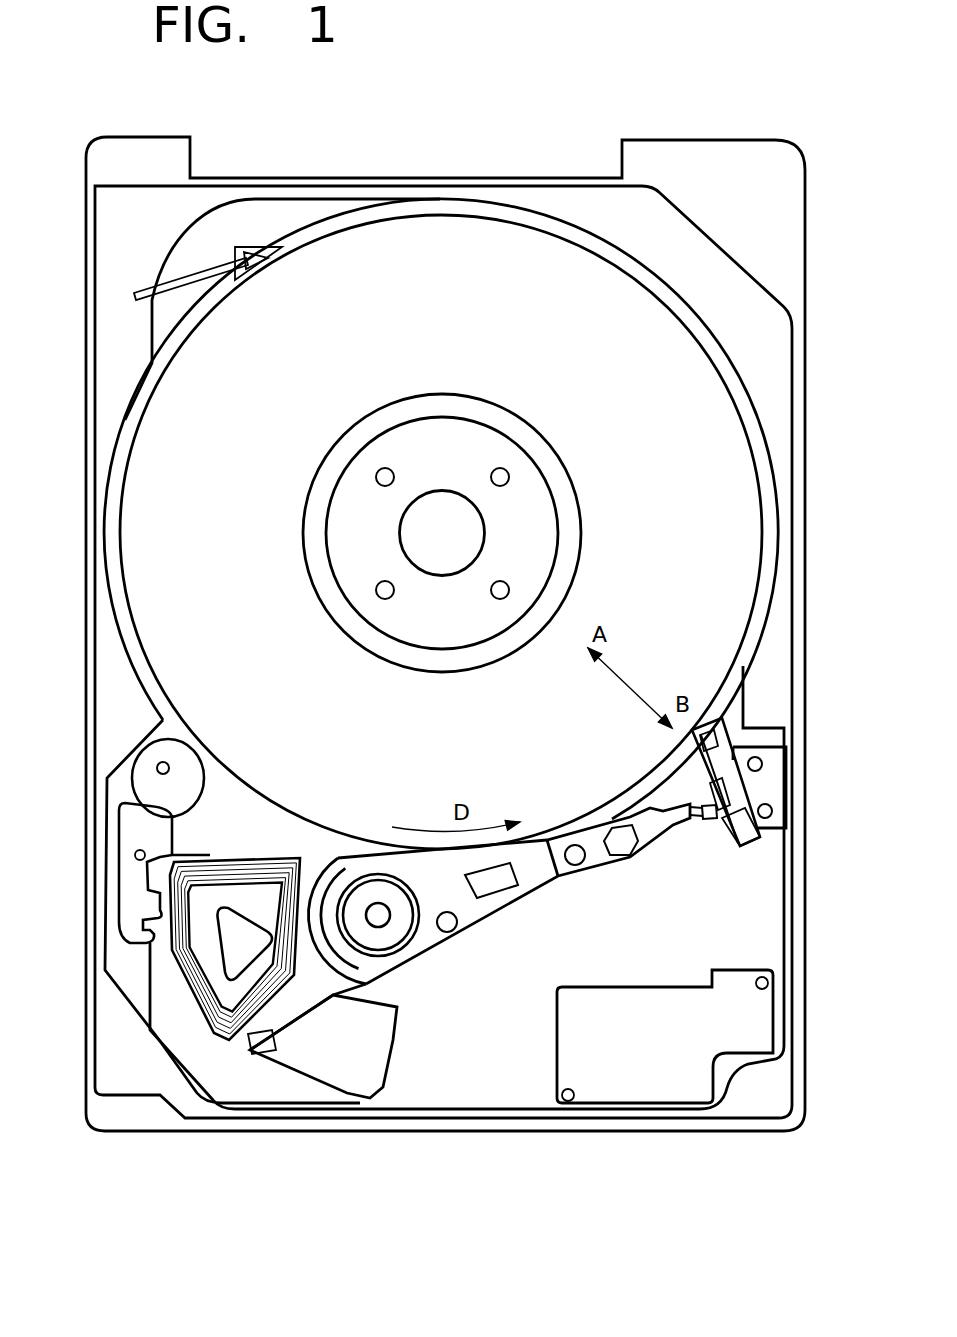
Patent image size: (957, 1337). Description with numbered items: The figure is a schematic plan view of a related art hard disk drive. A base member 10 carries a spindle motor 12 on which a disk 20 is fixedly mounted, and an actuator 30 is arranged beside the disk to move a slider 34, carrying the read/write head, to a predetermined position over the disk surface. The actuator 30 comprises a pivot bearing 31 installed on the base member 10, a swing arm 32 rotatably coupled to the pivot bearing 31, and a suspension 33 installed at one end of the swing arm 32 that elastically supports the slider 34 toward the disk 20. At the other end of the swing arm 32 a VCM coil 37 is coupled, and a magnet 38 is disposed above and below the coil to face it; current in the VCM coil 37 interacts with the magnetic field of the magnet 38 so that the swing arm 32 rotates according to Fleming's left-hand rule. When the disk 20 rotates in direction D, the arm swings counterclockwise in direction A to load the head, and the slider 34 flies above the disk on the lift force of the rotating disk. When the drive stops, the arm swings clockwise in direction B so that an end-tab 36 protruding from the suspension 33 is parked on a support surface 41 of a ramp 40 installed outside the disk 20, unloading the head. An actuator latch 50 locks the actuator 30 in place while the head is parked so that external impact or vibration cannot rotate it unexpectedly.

The base member 10 is at (775, 677).
The spindle motor 12 is at (475, 447).
The disk 20 is at (745, 495).
The actuator 30 is at (456, 1003).
The pivot bearing 31 is at (380, 917).
The swing arm 32 is at (507, 902).
The suspension 33 is at (676, 828).
The slider 34 is at (708, 820).
The end-tab 36 is at (722, 812).
The VCM coil 37 is at (227, 1036).
The magnet 38 is at (347, 1083).
The ramp 40 is at (727, 757).
The support surface 41 is at (730, 746).
The actuator latch 50 is at (127, 866).